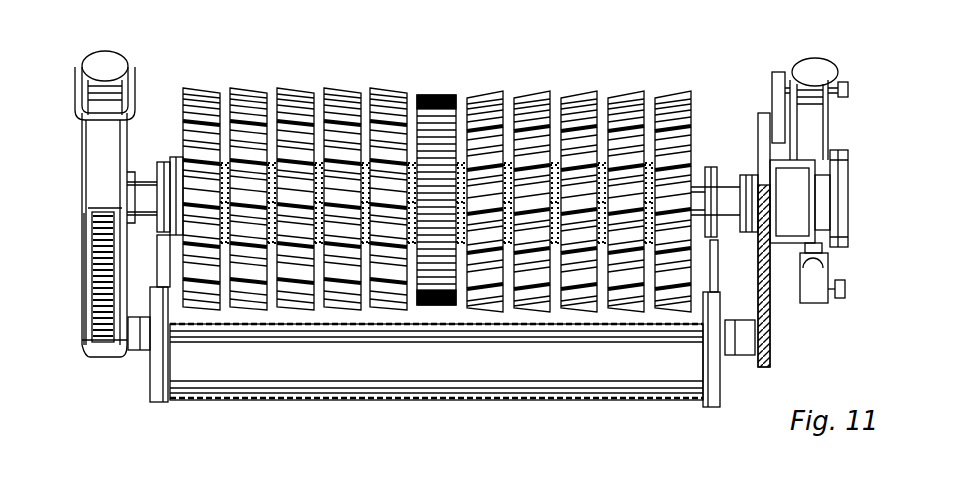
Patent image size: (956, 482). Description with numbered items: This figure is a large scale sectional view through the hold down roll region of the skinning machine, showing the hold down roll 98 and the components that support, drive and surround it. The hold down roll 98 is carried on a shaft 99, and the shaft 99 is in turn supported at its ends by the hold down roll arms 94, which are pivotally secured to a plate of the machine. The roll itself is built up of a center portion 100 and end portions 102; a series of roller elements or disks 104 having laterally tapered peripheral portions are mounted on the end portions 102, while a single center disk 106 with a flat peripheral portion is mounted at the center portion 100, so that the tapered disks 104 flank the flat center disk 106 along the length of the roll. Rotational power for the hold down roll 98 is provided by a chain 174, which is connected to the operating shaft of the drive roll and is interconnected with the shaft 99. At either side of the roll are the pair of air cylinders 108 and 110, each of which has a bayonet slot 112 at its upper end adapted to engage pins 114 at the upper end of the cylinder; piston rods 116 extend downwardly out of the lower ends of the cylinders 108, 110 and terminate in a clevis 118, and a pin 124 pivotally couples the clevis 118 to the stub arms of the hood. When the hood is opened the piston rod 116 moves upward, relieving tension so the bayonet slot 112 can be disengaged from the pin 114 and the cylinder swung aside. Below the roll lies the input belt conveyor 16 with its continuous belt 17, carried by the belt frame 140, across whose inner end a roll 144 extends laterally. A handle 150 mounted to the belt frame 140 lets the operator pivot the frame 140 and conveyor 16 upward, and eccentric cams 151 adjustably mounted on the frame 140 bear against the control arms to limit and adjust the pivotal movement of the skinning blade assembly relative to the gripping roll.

The belt conveyor 16 is at (284, 404).
The continuous belt 17 is at (340, 406).
The hold down roll arms 94 is at (83, 337).
The hold down roll 98 is at (545, 80).
The shaft 99 is at (151, 200).
The center portion 100 is at (432, 82).
The end portions 102 is at (240, 68).
The roller elements or disks 104 is at (327, 88).
The center disk 106 is at (445, 93).
The air cylinder 108 is at (783, 97).
The air cylinder 110 is at (140, 42).
The bayonet slot 112 is at (100, 90).
The pins 114 is at (76, 76).
The piston rods 116 is at (838, 264).
The clevis 118 is at (800, 300).
The pin 124 is at (844, 300).
The belt frame 140 is at (155, 390).
The roll 144 is at (627, 370).
The handle 150 is at (157, 253).
The eccentric cams 151 is at (140, 352).
The chain 174 is at (90, 270).